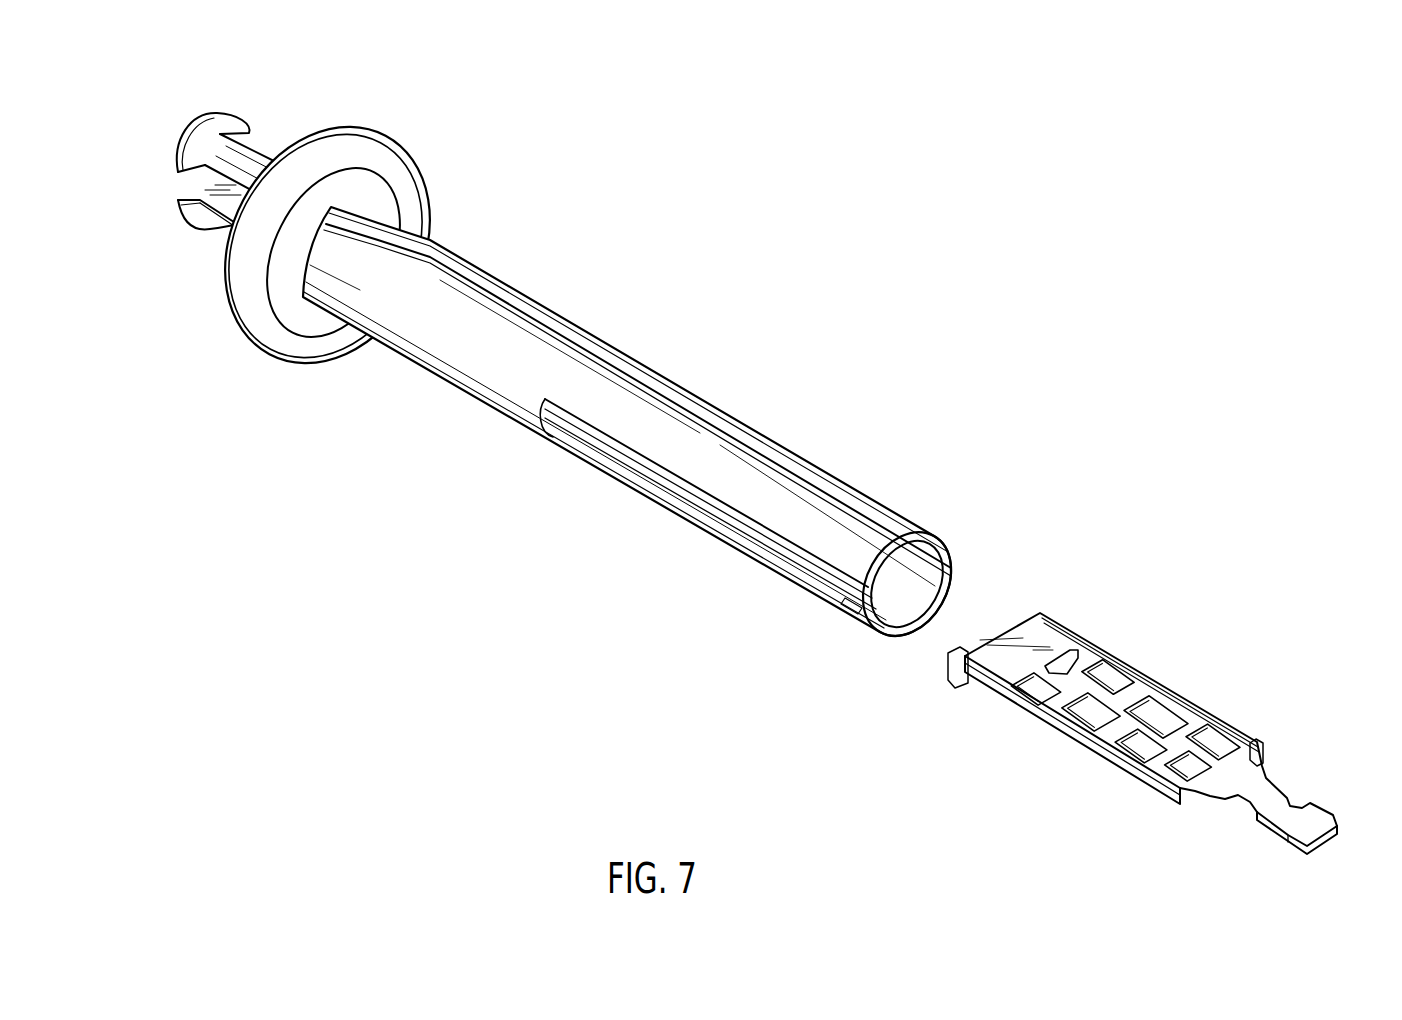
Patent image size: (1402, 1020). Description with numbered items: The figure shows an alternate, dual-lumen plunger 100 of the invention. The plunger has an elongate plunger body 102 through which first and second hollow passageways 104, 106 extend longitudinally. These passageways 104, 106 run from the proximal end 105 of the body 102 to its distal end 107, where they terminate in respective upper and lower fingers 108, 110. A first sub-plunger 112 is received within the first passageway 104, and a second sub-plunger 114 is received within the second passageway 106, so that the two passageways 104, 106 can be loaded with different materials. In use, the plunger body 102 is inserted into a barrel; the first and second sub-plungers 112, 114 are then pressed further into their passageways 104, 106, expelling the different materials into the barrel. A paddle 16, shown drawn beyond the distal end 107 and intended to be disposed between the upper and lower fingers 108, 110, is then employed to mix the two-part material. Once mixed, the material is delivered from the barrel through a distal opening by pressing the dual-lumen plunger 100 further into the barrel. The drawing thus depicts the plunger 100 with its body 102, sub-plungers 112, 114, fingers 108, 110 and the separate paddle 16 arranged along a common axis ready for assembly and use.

The plunger 100 is at (633, 384).
The plunger body 102 is at (718, 485).
The first hollow passageway 104 is at (950, 548).
The proximal end 105 is at (301, 202).
The second hollow passageway 106 is at (917, 618).
The distal end 107 is at (1013, 537).
The upper finger 108 is at (873, 512).
The lower finger 110 is at (690, 506).
The first sub-plunger 112 is at (230, 115).
The second sub-plunger 114 is at (197, 218).
The paddle 16 is at (1237, 648).